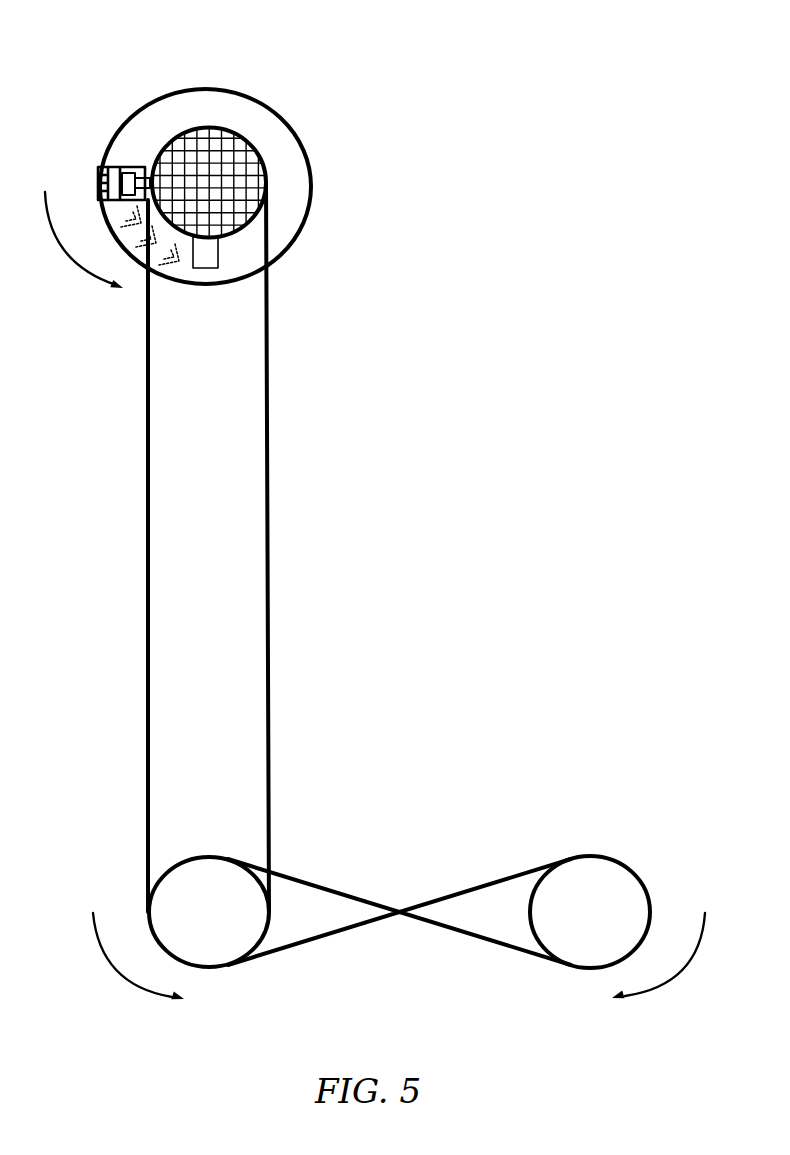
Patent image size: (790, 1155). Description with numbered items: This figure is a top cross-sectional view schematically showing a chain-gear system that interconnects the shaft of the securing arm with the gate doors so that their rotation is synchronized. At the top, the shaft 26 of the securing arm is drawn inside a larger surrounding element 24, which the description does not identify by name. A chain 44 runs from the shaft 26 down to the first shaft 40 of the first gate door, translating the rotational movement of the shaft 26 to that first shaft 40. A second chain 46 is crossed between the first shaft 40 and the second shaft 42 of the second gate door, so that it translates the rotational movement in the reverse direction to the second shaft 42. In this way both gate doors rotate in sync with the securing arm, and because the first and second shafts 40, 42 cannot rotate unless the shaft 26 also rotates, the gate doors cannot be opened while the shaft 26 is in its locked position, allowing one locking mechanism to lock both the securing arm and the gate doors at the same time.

The outer drum / housing 24 is at (269, 100).
The shaft 26 is at (194, 127).
The first shaft 40 is at (181, 898).
The second shaft 42 is at (617, 898).
The chain 44 is at (270, 617).
The chain 46 is at (468, 888).